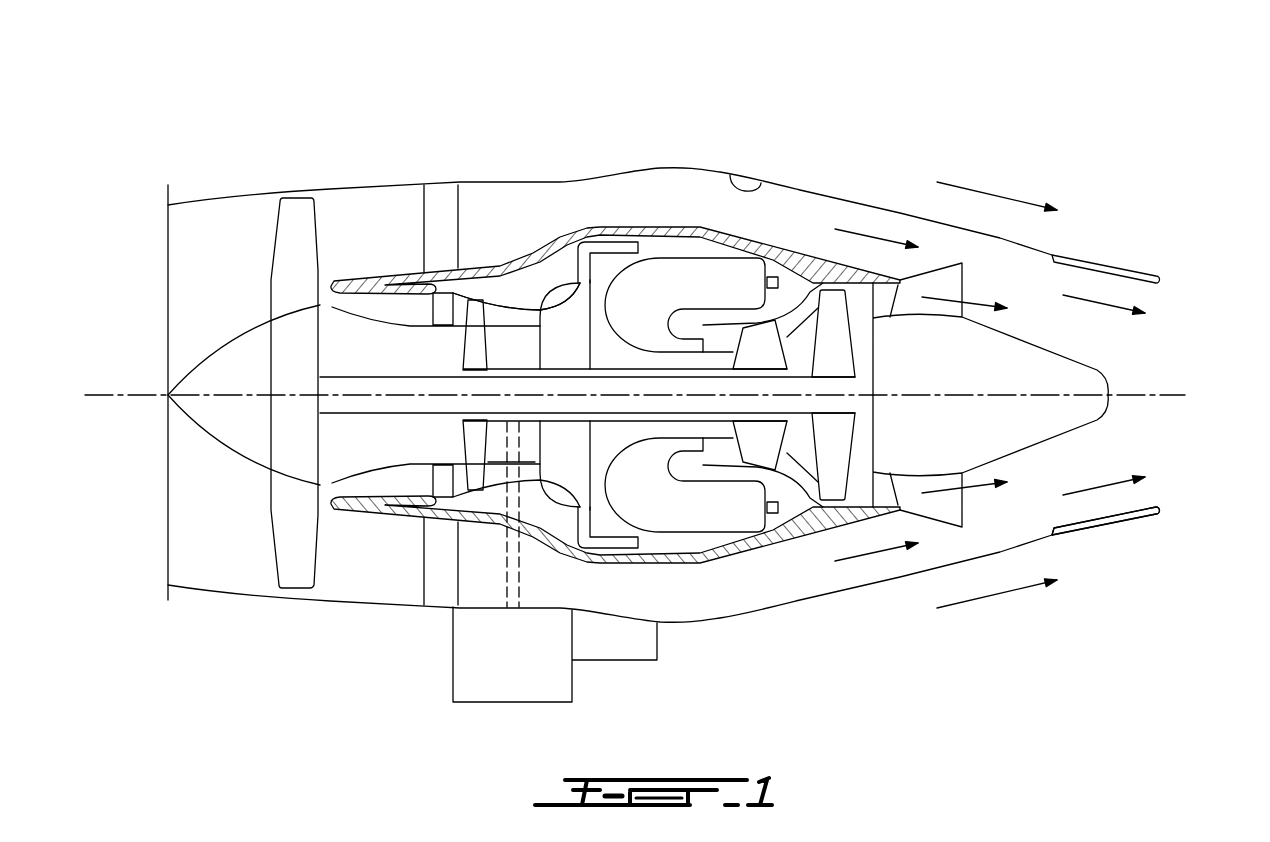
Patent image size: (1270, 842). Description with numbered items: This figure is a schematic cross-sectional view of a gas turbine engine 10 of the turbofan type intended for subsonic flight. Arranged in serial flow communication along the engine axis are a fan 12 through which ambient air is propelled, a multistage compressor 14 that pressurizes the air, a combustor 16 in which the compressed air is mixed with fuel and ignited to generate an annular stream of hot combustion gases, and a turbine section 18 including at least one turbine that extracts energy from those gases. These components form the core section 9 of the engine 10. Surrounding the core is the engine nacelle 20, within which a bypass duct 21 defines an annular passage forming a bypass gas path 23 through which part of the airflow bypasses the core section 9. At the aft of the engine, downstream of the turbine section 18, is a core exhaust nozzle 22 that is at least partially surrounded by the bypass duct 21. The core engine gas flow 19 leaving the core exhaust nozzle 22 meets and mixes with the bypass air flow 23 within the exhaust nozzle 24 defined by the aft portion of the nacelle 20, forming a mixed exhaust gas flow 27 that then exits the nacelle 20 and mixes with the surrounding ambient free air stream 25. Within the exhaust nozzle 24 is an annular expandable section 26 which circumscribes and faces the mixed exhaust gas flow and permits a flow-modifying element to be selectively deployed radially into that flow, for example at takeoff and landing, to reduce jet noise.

The gas turbine engine 10 is at (667, 351).
The fan 12 is at (290, 519).
The multistage compressor 14 is at (503, 307).
The core section 9 is at (550, 233).
The combustor 16 is at (687, 277).
The turbine section 18 is at (797, 450).
The core engine gas flow 19 is at (978, 300).
The engine nacelle 20 is at (800, 172).
The bypass duct 21 is at (760, 187).
The core exhaust nozzle 22 is at (975, 510).
The bypass gas path 23 is at (880, 233).
The exhaust nozzle 24 is at (1107, 260).
The ambient free air stream 25 is at (992, 193).
The annular expandable section 26 is at (1150, 285).
The mixed exhaust gas flow 27 is at (1097, 488).